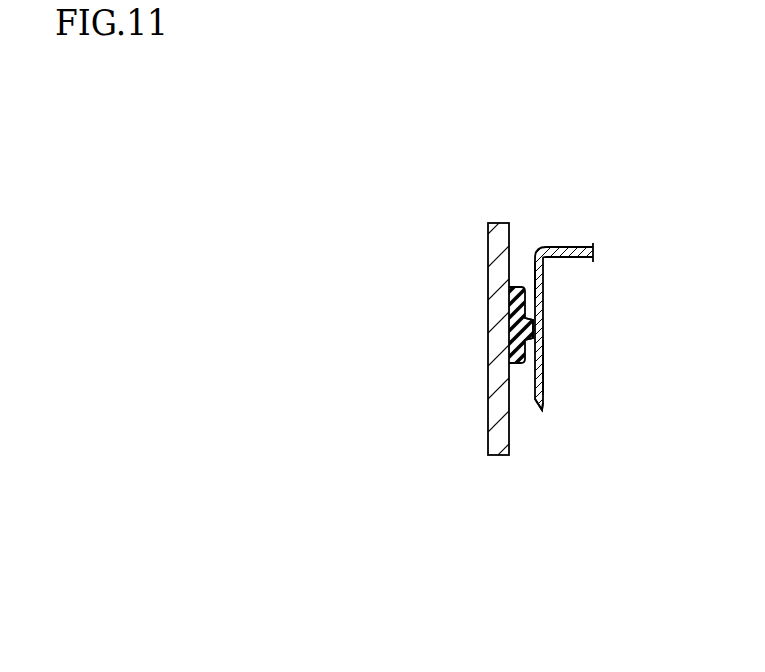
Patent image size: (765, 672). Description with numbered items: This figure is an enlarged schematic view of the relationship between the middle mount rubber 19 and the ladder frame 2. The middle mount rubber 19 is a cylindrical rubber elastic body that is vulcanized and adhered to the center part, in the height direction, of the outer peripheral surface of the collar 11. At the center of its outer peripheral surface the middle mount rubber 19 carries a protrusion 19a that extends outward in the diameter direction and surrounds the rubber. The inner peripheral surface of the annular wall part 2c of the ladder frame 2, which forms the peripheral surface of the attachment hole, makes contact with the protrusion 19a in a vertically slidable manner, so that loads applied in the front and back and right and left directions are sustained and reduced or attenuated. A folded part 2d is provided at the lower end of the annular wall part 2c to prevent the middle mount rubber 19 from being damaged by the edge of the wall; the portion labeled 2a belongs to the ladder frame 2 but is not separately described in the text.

The ladder frame 2 is at (575, 248).
The side wall of panel member 2a is at (534, 292).
The annular wall part 2c is at (544, 375).
The folded part 2d is at (547, 400).
The collar 11 is at (490, 412).
The middle mount rubber 19 is at (515, 310).
The protrusion 19a is at (544, 322).